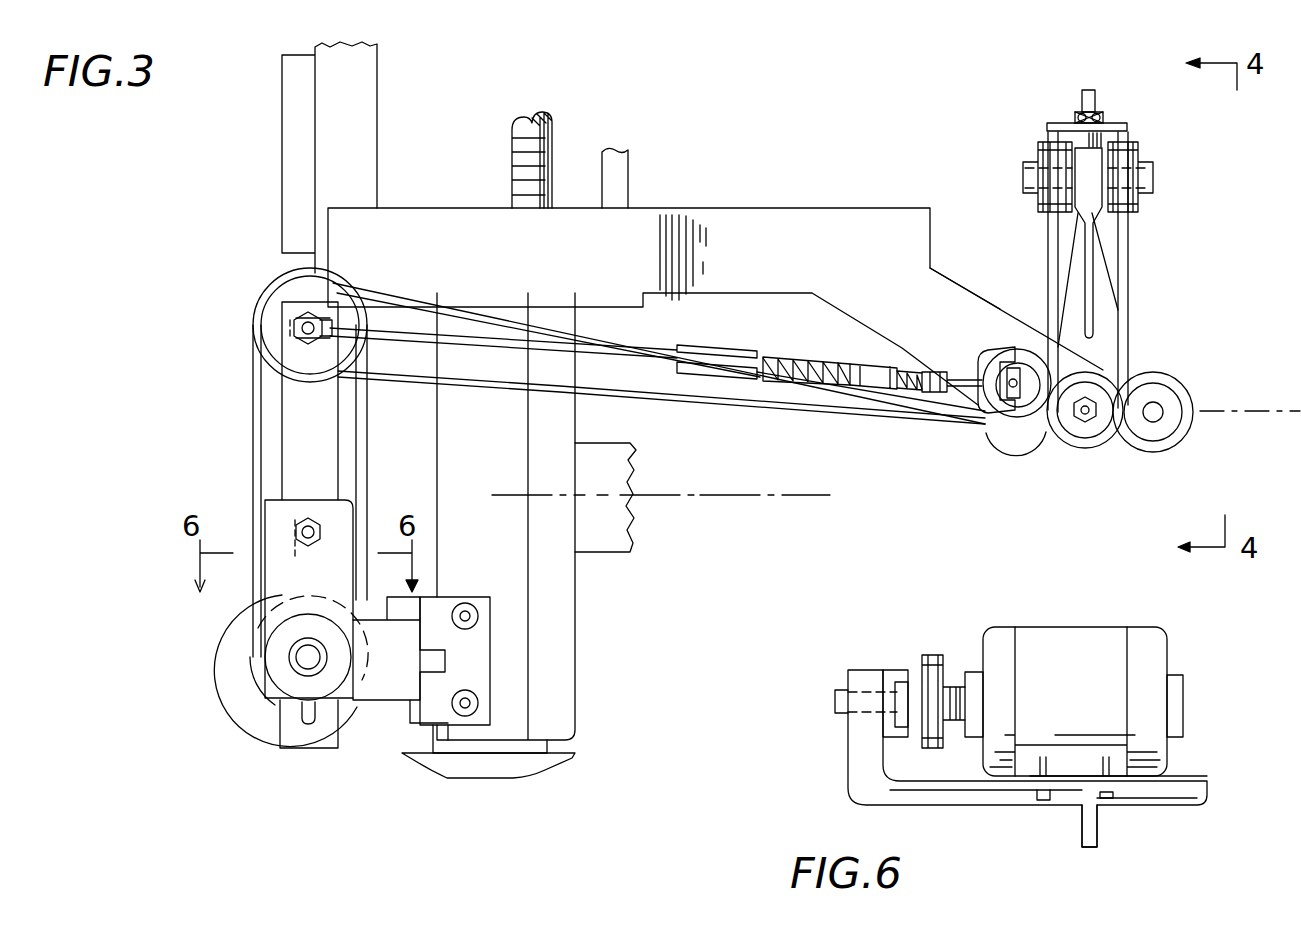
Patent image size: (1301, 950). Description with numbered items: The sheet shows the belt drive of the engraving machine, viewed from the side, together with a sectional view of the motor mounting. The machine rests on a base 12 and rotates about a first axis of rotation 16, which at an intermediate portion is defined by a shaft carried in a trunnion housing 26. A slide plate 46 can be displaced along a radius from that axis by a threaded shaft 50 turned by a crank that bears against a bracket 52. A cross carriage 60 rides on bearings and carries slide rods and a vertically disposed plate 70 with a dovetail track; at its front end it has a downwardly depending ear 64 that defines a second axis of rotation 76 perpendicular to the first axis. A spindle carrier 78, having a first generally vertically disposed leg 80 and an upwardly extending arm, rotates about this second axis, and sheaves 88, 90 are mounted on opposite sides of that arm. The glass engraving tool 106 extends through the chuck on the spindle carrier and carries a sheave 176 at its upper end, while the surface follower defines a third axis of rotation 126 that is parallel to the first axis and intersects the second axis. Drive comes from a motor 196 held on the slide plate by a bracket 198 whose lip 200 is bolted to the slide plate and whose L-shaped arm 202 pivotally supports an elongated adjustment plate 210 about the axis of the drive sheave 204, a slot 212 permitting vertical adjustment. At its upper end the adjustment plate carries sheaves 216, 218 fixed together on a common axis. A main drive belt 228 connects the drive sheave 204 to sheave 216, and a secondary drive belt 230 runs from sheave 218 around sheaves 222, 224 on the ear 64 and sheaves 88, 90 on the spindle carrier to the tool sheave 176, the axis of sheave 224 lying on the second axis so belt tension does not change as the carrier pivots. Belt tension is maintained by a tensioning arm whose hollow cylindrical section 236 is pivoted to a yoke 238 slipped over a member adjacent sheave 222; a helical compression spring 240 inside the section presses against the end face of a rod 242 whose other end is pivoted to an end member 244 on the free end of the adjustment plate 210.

In FIG. 3, the base 12 is at (510, 760).
In FIG. 3, the first axis of rotation 16 is at (695, 497).
In FIG. 3, the trunnion housing 26 is at (640, 478).
In FIG. 3, the slide plate 46 is at (560, 613).
In FIG. 3, the threaded shaft 50 is at (515, 142).
In FIG. 3, the bracket 52 is at (615, 175).
In FIG. 3, the cross carriage 60 is at (716, 214).
In FIG. 3, the ear 64 is at (958, 292).
In FIG. 3, the vertically disposed plate 70 is at (360, 71).
In FIG. 3, the second axis of rotation 76 is at (1085, 420).
In FIG. 3, the spindle carrier 78 is at (1100, 285).
In FIG. 3, the first generally vertically disposed leg 80 is at (1103, 312).
In FIG. 3, the sheave 88 is at (1030, 147).
In FIG. 3, the sheave 90 is at (1140, 160).
In FIG. 3, the glass engraving tool 106 is at (1092, 92).
In FIG. 3, the third axis of rotation 126 is at (1242, 414).
In FIG. 3, the sheave 176 is at (1110, 123).
In FIG. 3, the motor 196 is at (430, 600).
In FIG. 6, the motor 196 is at (1093, 628).
In FIG. 6, the bracket 198 is at (1090, 812).
In FIG. 3, the lip 200 is at (450, 740).
In FIG. 6, the lip 200 is at (1102, 818).
In FIG. 3, the L-shaped arm 202 is at (403, 693).
In FIG. 6, the L-shaped arm 202 is at (880, 797).
In FIG. 3, the drive sheave 204 is at (262, 659).
In FIG. 6, the drive sheave 204 is at (950, 655).
In FIG. 3, the adjustment plate 210 is at (285, 461).
In FIG. 6, the adjustment plate 210 is at (888, 670).
In FIG. 3, the slot 212 is at (300, 724).
In FIG. 3, the sheave 216 is at (252, 312).
In FIG. 3, the sheave 218 is at (270, 327).
In FIG. 3, the sheave 222 is at (1018, 347).
In FIG. 3, the sheave 224 is at (1115, 388).
In FIG. 3, the main drive belt 228 is at (255, 430).
In FIG. 3, the secondary drive belt 230 is at (484, 318).
In FIG. 3, the elongated hollow cylindrical section 236 is at (840, 377).
In FIG. 3, the yoke 238 is at (995, 350).
In FIG. 3, the helical compression spring 240 is at (788, 358).
In FIG. 3, the rod 242 is at (655, 347).
In FIG. 3, the end member 244 is at (322, 318).